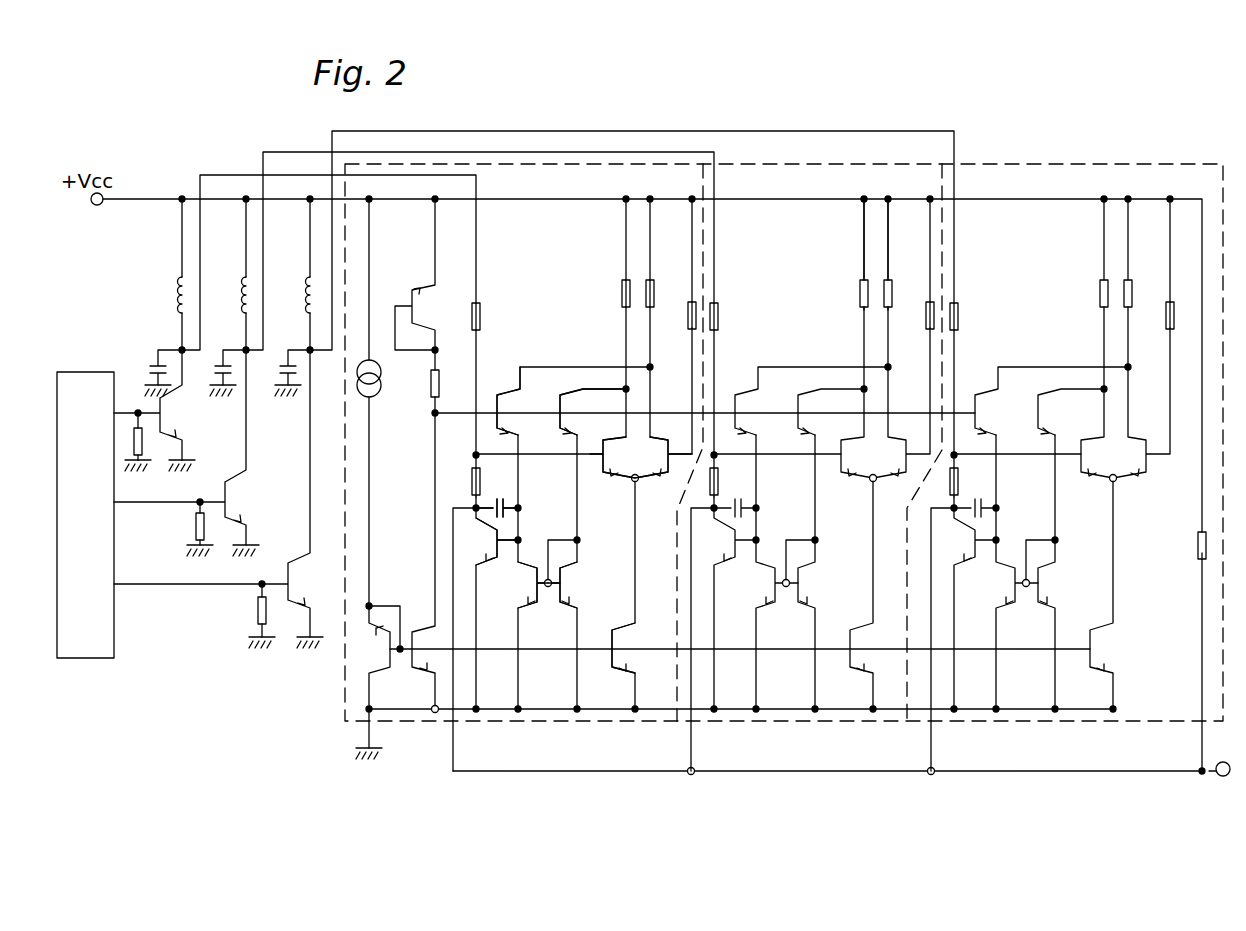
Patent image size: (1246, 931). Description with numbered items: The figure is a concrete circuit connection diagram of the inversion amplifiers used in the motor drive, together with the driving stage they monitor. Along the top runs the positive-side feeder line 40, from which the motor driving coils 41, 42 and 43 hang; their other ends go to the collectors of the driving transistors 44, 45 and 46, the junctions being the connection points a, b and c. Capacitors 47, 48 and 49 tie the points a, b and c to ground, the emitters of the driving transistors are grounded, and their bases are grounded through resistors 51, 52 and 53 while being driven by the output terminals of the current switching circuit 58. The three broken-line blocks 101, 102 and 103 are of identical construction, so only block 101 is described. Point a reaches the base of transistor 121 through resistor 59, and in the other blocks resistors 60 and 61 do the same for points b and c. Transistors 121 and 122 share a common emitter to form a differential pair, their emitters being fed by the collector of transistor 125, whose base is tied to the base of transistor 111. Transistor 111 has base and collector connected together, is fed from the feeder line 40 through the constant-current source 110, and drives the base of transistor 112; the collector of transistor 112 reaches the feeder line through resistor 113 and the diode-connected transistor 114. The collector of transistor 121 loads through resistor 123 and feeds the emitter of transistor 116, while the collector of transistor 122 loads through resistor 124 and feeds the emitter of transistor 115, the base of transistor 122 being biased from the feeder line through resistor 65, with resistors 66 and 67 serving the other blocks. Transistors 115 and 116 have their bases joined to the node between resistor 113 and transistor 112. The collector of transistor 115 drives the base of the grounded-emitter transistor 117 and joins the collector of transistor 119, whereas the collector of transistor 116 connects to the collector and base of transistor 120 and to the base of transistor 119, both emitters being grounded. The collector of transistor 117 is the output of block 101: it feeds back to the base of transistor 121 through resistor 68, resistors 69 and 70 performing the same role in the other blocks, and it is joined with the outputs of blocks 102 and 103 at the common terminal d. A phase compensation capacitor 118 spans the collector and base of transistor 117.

The positive-side feeder line of the power supply 40 is at (163, 198).
The motor driving coil 41 is at (178, 292).
The motor driving coil 42 is at (242, 292).
The motor driving coil 43 is at (306, 292).
The driving transistor 44 is at (172, 425).
The driving transistor 45 is at (232, 494).
The driving transistor 46 is at (305, 607).
The capacitor 47 is at (150, 366).
The capacitor 48 is at (220, 378).
The capacitor 49 is at (285, 378).
The resistor 51 is at (143, 442).
The resistor 52 is at (197, 525).
The resistor 53 is at (258, 612).
The current switching circuit 58 is at (100, 658).
The resistor 59 is at (478, 305).
The resistor 60 is at (717, 305).
The resistor 61 is at (956, 305).
The resistor 65 is at (690, 305).
The resistor 66 is at (929, 305).
The resistor 67 is at (1170, 305).
The resistor 68 is at (470, 482).
The resistor 69 is at (720, 482).
The resistor 70 is at (960, 482).
The block 101 is at (540, 483).
The block 102 is at (812, 483).
The block 103 is at (1052, 483).
The constant-current source 110 is at (381, 389).
The transistor 111 is at (402, 563).
The transistor 112 is at (400, 642).
The resistor 113 is at (432, 388).
The diode-connected transistor 114 is at (428, 292).
The transistor 115 is at (500, 393).
The transistor 116 is at (565, 436).
The transistor 117 is at (488, 558).
The phase compensation capacitor 118 is at (500, 498).
The transistor 119 is at (530, 592).
The transistor 120 is at (572, 586).
The transistor 121 is at (610, 480).
The transistor 122 is at (645, 482).
The resistor 123 is at (624, 292).
The resistor 124 is at (650, 309).
The transistor 125 is at (630, 661).
The connection point a is at (178, 350).
The connection point b is at (243, 350).
The connection point c is at (307, 350).
The common connection point d is at (1228, 776).